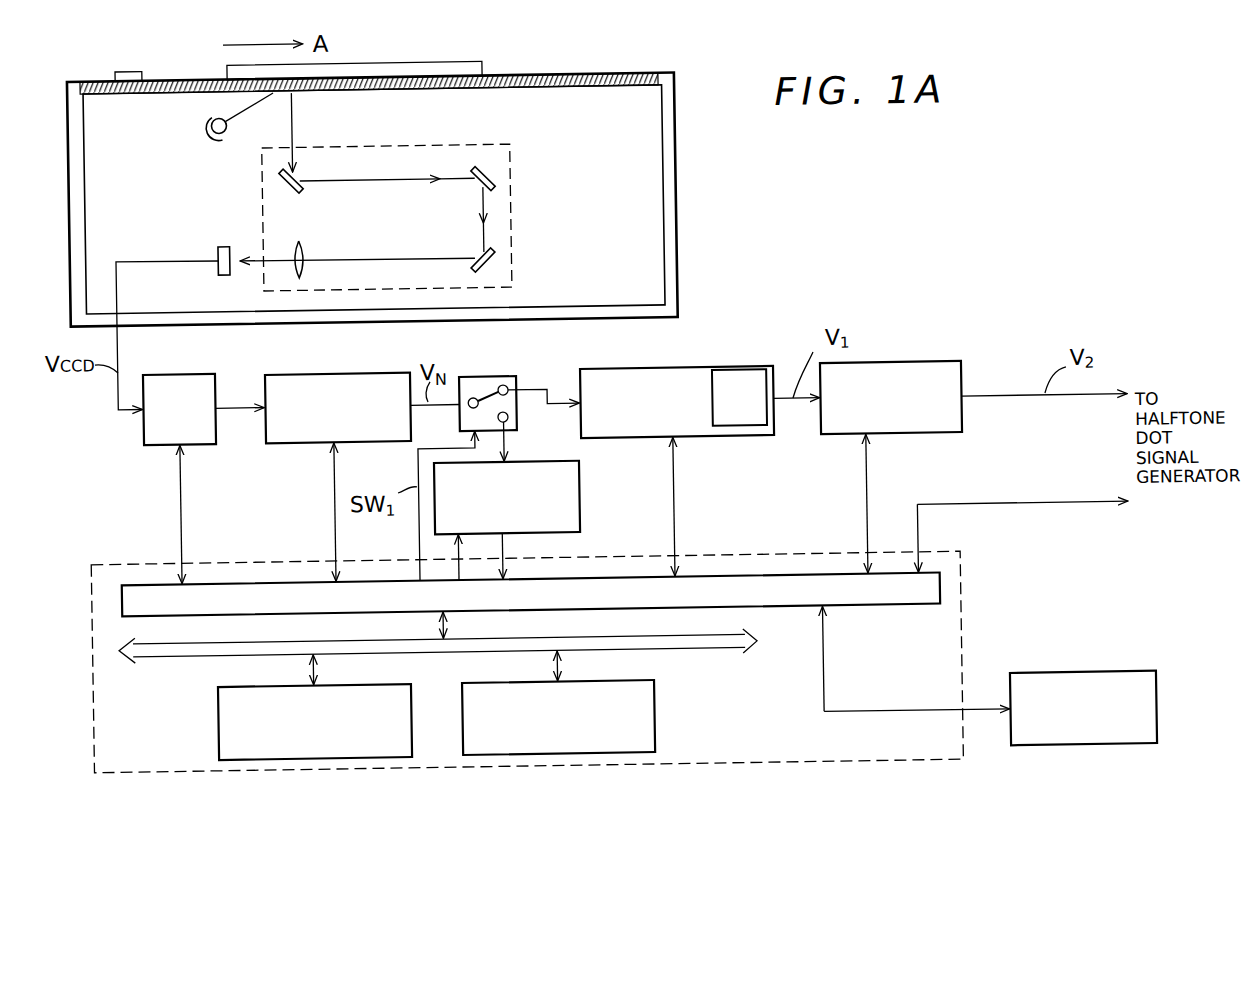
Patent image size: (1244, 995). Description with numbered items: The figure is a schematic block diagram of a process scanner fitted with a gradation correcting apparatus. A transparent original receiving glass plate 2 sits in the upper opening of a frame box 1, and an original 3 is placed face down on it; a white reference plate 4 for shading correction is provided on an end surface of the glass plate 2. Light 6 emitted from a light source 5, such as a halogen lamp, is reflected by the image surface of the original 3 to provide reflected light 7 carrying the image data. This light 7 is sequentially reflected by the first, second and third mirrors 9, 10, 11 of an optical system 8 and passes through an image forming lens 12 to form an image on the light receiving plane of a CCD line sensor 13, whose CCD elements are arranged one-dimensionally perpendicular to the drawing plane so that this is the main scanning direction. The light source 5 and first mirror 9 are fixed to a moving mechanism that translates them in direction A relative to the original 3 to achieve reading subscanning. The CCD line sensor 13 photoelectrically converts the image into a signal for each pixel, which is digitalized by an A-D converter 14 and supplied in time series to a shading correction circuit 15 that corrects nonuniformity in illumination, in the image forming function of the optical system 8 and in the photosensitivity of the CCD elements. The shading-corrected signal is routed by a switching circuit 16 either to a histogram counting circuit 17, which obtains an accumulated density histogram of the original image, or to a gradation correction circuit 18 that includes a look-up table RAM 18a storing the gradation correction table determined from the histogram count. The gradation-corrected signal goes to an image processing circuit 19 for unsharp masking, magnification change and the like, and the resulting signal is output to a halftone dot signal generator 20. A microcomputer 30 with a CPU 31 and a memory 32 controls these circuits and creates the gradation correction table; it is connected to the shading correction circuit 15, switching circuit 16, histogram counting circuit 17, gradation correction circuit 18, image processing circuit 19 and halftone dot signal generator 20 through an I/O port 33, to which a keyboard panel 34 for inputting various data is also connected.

The frame box 1 is at (684, 193).
The original receiving glass plate 2 is at (583, 71).
The original 3 is at (448, 59).
The white reference plate 4 is at (133, 64).
The light source 5 is at (202, 128).
The light 6 is at (253, 107).
The reflected light 7 is at (300, 130).
The optical system 8 is at (442, 142).
The first mirror 9 is at (294, 190).
The second mirror 10 is at (497, 176).
The third mirror 11 is at (496, 263).
The image forming lens 12 is at (308, 248).
The CCD line sensor 13 is at (226, 241).
The A-D converter 14 is at (174, 368).
The shading correction circuit 15 is at (338, 369).
The switching circuit 16 is at (486, 373).
The histogram counting circuit 17 is at (584, 489).
The gradation correction circuit 18 is at (653, 368).
The look-up table RAM 18a is at (723, 372).
The image processing circuit 19 is at (901, 366).
The halftone dot signal generator 20 is at (1040, 529).
The microcomputer 30 is at (440, 765).
The CPU 31 is at (214, 707).
The memory 32 is at (651, 704).
The I/O port 33 is at (900, 609).
The keyboard panel 34 is at (1081, 680).